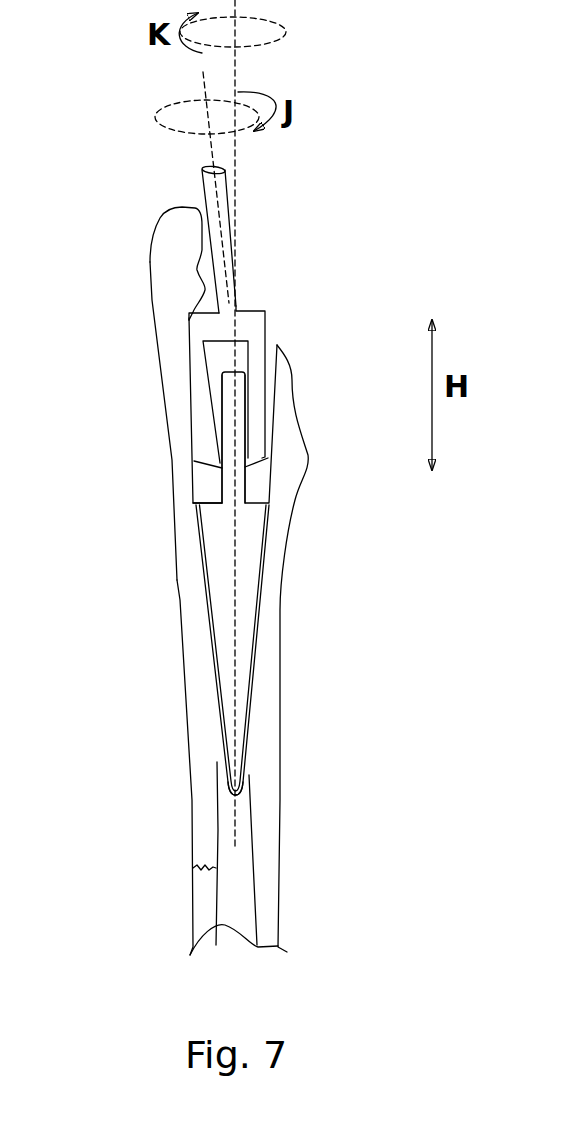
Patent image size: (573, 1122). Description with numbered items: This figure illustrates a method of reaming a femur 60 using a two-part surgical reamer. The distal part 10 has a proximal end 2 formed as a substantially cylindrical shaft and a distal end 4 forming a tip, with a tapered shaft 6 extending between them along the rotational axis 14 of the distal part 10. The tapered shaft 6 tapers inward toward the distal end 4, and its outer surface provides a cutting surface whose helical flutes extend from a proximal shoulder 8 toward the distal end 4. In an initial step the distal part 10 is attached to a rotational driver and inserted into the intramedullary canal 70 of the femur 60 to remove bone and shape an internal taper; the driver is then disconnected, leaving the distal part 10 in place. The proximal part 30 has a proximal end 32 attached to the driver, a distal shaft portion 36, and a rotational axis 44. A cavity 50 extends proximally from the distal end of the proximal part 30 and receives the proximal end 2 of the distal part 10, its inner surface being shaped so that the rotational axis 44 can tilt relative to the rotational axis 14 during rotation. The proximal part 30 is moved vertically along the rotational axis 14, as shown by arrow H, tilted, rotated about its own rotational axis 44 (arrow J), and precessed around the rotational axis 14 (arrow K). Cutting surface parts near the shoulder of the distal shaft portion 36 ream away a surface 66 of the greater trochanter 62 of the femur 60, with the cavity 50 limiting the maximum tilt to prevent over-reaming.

The proximal end 2 is at (215, 437).
The distal end 4 is at (250, 792).
The tapered shaft 6 is at (262, 606).
The proximal shoulder 8 is at (192, 502).
The distal part 10 is at (179, 558).
The rotational axis 14 is at (246, 222).
The proximal part 30 is at (271, 308).
The proximal end 32 is at (199, 193).
The distal shaft portion 36 is at (261, 422).
The rotational axis 44 is at (204, 117).
The cavity 50 is at (204, 353).
The femur 60 is at (278, 825).
The greater trochanter 62 is at (164, 229).
The surface 66 is at (185, 393).
The intramedullary canal 70 is at (250, 877).